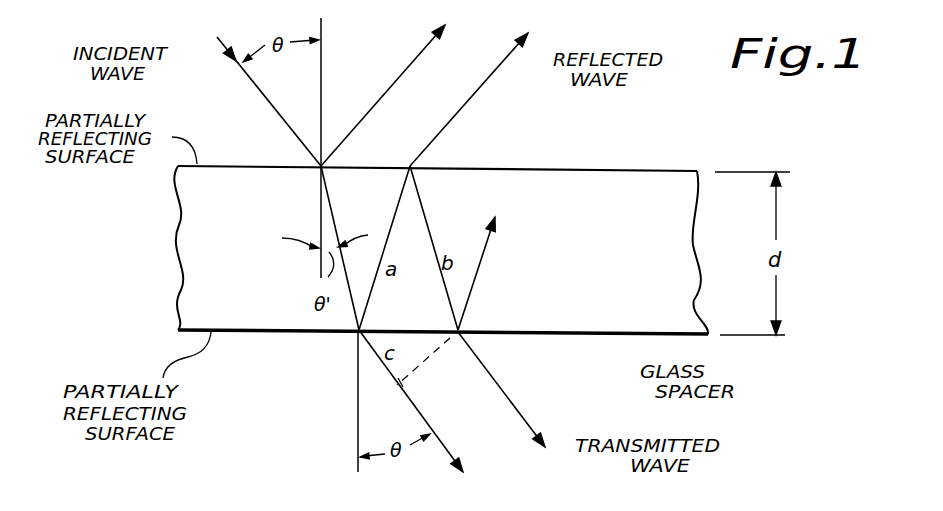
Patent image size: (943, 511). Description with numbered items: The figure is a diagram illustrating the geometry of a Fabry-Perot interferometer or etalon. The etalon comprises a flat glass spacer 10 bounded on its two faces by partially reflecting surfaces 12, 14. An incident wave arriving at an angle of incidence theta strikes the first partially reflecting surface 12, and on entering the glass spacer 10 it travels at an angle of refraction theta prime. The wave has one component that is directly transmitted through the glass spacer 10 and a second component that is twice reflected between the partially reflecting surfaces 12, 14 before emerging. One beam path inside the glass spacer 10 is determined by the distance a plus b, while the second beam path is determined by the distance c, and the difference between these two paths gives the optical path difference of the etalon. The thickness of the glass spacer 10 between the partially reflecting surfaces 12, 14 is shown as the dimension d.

The glass spacer 10 is at (630, 240).
The partially reflecting surface 12 is at (606, 166).
The partially reflecting surface 14 is at (553, 334).